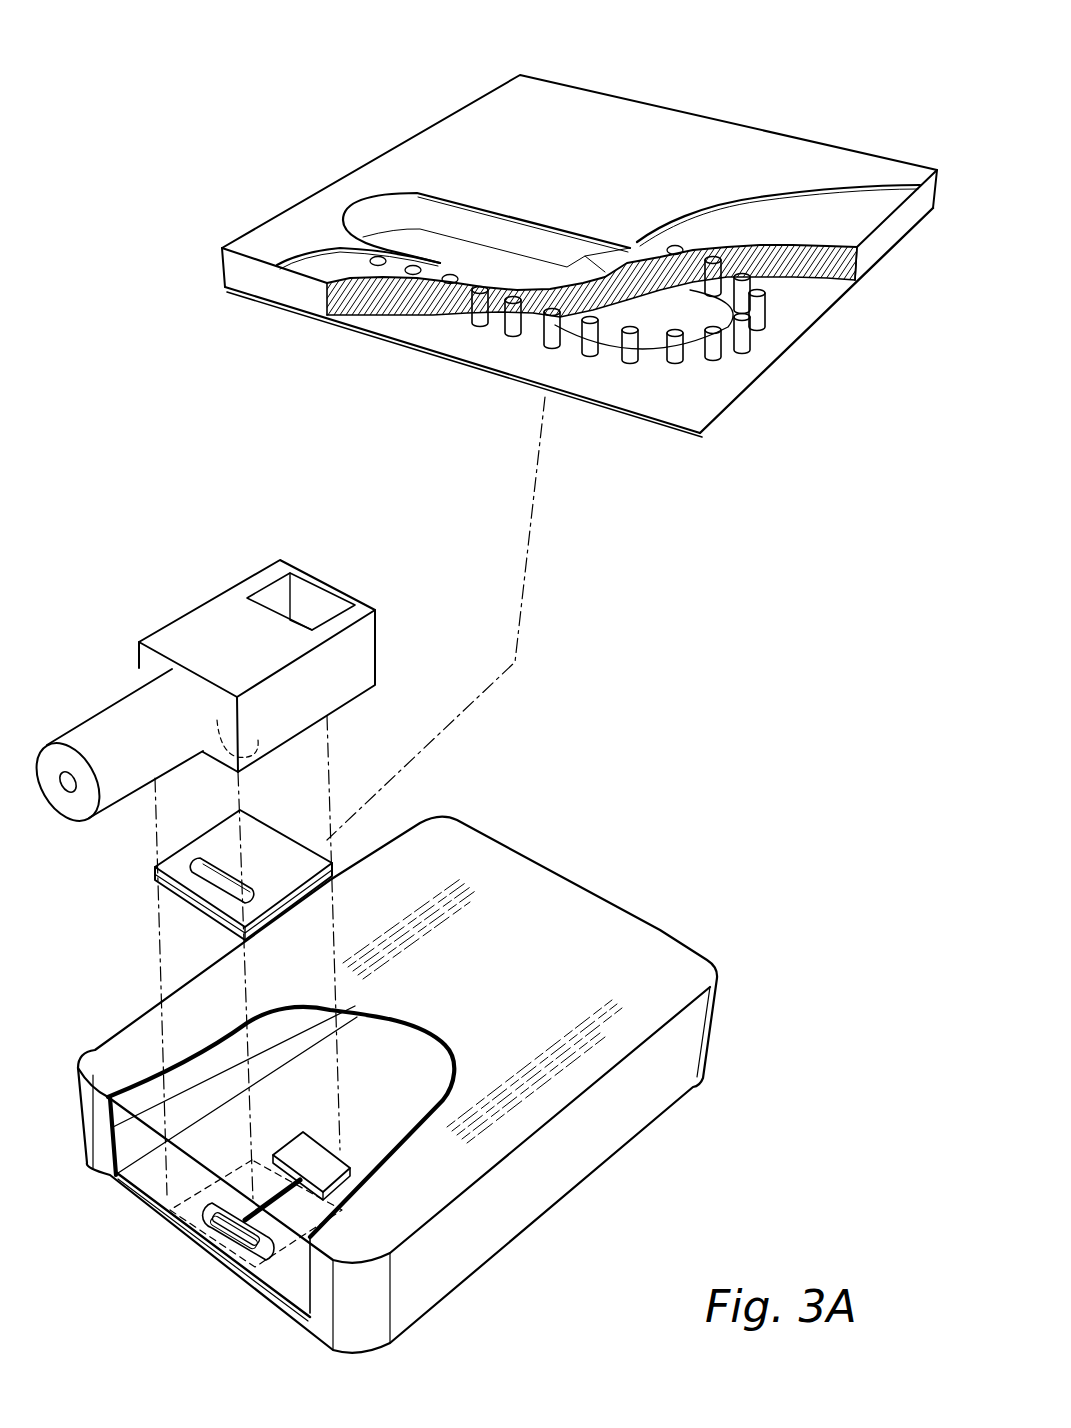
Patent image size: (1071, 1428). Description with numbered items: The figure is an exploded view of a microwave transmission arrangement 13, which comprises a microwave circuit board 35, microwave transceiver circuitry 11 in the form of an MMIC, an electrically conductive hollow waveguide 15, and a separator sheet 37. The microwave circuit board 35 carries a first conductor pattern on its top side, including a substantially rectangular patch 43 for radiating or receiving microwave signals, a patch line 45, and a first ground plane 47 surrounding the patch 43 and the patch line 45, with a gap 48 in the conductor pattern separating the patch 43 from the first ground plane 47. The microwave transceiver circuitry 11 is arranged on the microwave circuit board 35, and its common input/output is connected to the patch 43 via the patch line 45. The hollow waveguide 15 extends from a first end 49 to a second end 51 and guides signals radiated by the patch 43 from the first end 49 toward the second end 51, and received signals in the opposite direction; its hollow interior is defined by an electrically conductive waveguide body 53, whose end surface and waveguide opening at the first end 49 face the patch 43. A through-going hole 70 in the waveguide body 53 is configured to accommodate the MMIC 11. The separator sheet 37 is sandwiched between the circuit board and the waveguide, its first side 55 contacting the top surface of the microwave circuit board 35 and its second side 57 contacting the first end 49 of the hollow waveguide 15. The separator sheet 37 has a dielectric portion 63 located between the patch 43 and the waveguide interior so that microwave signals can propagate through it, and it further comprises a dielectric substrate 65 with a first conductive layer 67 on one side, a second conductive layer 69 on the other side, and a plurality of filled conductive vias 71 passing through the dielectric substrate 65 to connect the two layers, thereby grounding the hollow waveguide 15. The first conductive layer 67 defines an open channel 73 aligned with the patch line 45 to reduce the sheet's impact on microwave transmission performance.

The microwave transceiver circuitry 11 is at (318, 1173).
The microwave transmission arrangement 13 is at (408, 1036).
The electrically conductive hollow waveguide 15 is at (199, 700).
The microwave circuit board 35 is at (148, 1186).
The separator sheet 37 is at (706, 94).
The patch 43 is at (228, 1225).
The patch line 45 is at (205, 1208).
The first ground plane 47 is at (240, 1190).
The gap 48 is at (262, 1250).
The first end 49 is at (278, 737).
The second end 51 is at (57, 822).
The electrically conductive waveguide body 53 is at (232, 655).
The first side 55 is at (654, 428).
The second side 57 is at (582, 102).
The dielectric portion 63 is at (502, 265).
The dielectric substrate 65 is at (890, 233).
The first conductive layer 67 is at (797, 317).
The second conductive layer 69 is at (790, 167).
The through-going hole 70 is at (300, 595).
The conductive vias 71 is at (720, 352).
The open channel 73 is at (590, 253).